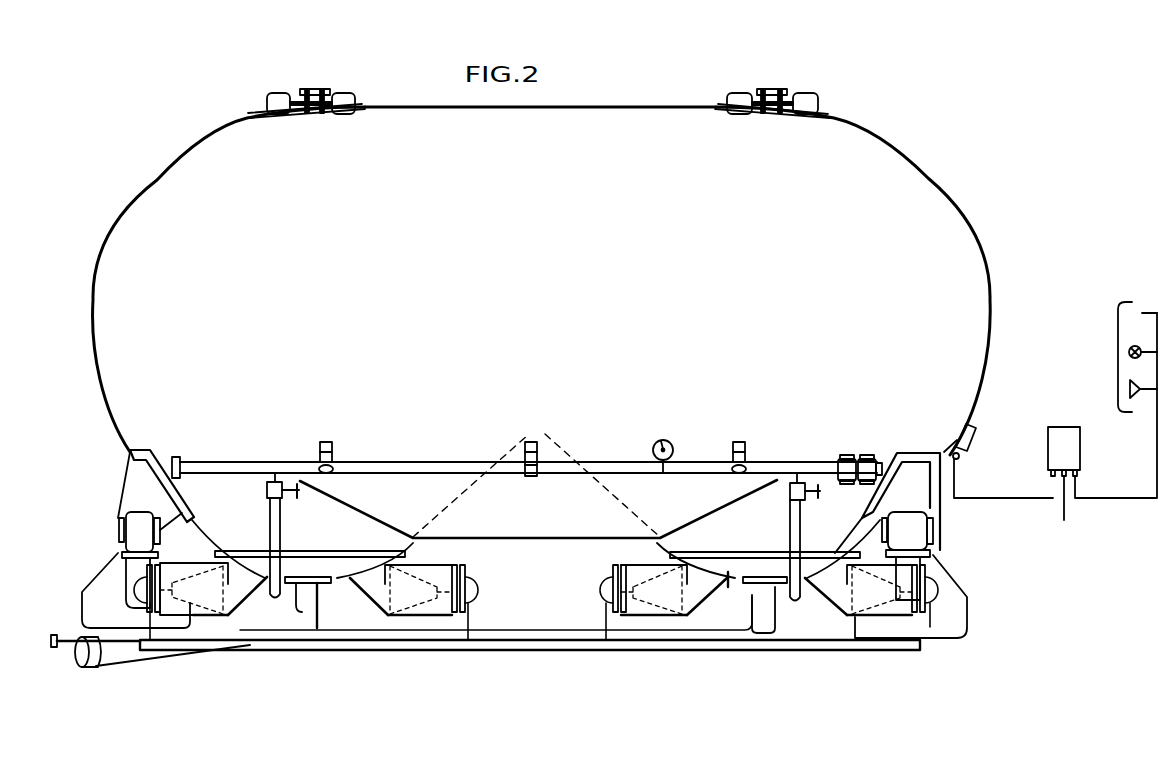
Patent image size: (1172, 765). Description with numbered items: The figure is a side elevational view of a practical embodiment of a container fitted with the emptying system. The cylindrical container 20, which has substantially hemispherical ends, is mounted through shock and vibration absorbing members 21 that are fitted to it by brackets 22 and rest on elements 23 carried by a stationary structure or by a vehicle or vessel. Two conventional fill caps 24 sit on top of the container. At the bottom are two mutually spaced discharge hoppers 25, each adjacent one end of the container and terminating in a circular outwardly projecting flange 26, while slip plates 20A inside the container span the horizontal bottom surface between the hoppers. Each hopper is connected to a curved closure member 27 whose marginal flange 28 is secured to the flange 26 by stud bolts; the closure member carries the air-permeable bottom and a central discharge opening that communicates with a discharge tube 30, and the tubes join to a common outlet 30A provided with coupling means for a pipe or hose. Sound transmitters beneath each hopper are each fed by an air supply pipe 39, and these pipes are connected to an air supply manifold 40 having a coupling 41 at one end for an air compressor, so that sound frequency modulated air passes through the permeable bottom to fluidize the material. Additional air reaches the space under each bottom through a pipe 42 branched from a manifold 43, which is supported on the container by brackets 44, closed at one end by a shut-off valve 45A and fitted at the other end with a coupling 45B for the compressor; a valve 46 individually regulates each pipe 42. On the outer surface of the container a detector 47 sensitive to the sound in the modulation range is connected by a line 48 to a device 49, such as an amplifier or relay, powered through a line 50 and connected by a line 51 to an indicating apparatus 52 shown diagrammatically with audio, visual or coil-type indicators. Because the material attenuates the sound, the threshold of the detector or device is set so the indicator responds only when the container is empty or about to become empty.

The container 20 is at (918, 185).
The slip plates 20A is at (495, 466).
The shock and vibration absorbing members 21 is at (121, 530).
The brackets 22 is at (135, 472).
The elements 23 is at (86, 598).
The fill caps 24 is at (290, 91).
The discharge hoppers 25 is at (352, 516).
The flange 26 is at (263, 550).
The closure member 27 is at (340, 572).
The flange 28 is at (395, 552).
The discharge tube 30 is at (303, 601).
The common outlet 30A is at (88, 667).
The air supply pipe 39 is at (147, 645).
The air supply manifold 40 is at (508, 642).
The coupling 41 is at (50, 644).
The pipe 42 is at (280, 526).
The manifold 43 is at (422, 462).
The brackets 44 is at (329, 420).
The shut-off valve 45A is at (856, 459).
The coupling 45B is at (185, 458).
The valve 46 is at (267, 491).
The detector 47 is at (976, 434).
The line 48 is at (1014, 498).
The device 49 is at (1064, 436).
The line 50 is at (1068, 518).
The line 51 is at (1127, 483).
The indicating apparatus 52 is at (1118, 350).